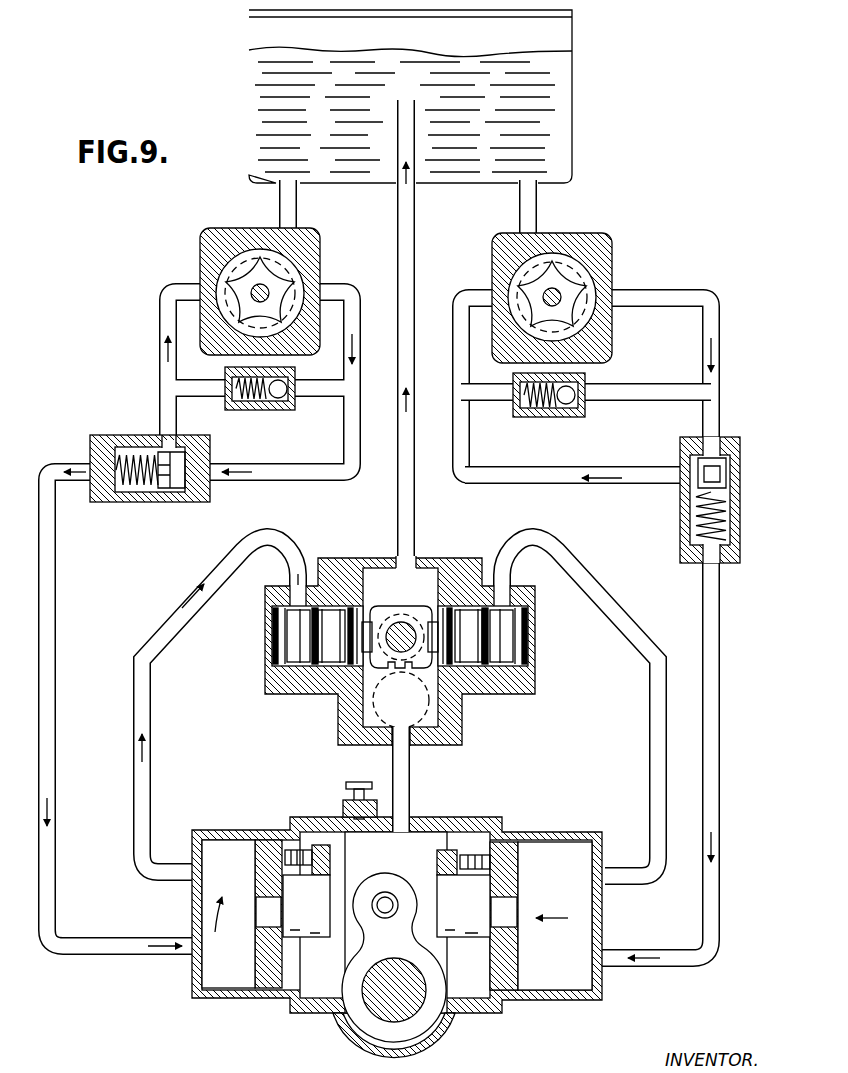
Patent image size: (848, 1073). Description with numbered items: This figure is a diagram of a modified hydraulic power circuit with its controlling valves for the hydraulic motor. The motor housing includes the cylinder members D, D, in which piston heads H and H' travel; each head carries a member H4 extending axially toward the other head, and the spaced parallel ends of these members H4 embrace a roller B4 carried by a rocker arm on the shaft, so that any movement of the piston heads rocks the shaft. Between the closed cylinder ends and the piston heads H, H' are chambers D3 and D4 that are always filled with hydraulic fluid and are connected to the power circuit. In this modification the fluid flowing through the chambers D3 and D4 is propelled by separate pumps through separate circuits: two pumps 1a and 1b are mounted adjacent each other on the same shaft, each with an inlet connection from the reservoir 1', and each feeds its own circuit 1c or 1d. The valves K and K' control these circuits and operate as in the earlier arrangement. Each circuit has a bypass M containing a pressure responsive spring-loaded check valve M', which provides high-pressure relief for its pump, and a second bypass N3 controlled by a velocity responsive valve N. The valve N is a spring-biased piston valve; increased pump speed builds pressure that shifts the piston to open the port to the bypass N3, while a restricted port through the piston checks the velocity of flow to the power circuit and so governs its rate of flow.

The reservoir 1' is at (422, 96).
The pump 1a is at (222, 230).
The pump 1b is at (612, 245).
The circuit 1c is at (158, 360).
The circuit 1d is at (722, 338).
The bypass M is at (586, 376).
The pressure responsive valve M' is at (549, 411).
The second bypass N3 is at (633, 478).
The velocity responsive valve N is at (742, 498).
The valve K is at (300, 641).
The valve K' is at (503, 643).
The roller B4 is at (400, 874).
The member H4 is at (386, 906).
The chamber D3 is at (228, 914).
The chamber D4 is at (555, 916).
The cylinder member D is at (245, 998).
The piston head H is at (268, 948).
The piston head H' is at (504, 944).